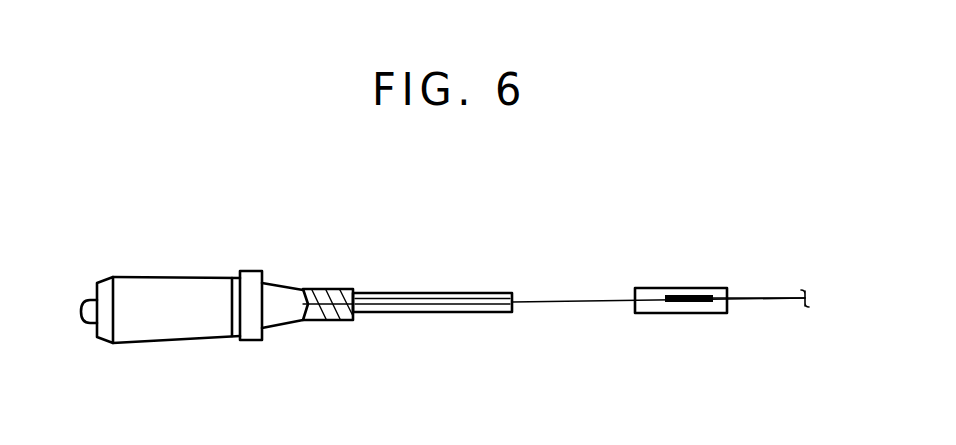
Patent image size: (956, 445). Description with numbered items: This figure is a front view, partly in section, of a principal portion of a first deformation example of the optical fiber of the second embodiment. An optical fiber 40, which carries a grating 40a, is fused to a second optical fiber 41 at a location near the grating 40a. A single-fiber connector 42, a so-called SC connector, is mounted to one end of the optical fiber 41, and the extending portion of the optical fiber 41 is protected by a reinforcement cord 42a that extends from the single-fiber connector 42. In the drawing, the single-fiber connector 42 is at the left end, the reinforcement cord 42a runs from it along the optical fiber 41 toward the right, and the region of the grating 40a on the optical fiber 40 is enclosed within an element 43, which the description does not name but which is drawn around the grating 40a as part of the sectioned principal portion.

The optical fiber 40 is at (760, 298).
The grating 40a is at (700, 313).
The optical fiber 41 is at (551, 304).
The single-fiber connector 42 is at (195, 275).
The reinforcement cord 42a is at (434, 292).
The protective tube 43 is at (648, 292).